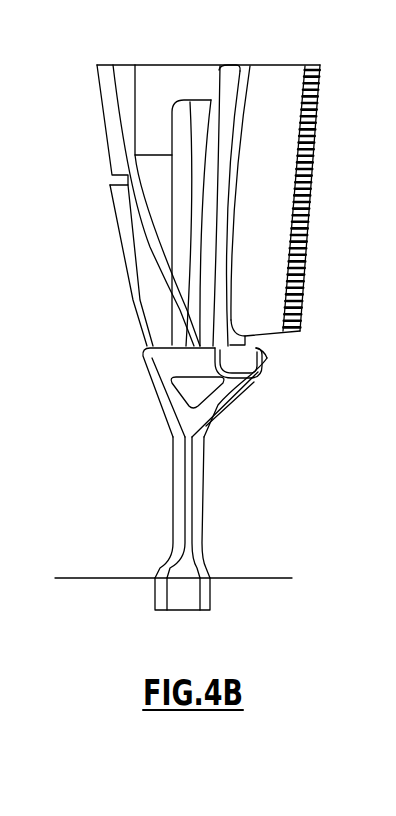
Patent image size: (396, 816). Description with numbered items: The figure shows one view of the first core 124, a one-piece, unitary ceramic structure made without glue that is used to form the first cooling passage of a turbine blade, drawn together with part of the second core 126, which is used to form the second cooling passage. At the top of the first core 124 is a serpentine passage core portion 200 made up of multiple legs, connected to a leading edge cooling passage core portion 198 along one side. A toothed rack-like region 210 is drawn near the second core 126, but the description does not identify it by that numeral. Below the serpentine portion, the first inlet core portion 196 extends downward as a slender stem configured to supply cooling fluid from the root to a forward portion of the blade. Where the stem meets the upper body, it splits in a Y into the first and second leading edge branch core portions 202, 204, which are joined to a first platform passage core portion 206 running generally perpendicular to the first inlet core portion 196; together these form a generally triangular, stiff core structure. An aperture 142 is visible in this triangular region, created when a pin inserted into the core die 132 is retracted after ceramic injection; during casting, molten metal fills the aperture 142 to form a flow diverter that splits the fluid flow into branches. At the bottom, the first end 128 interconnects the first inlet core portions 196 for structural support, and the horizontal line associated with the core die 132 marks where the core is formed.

The serpentine passage core portion 200 is at (167, 80).
The leading edge cooling passage core portion 198 is at (104, 120).
The first core 124 is at (108, 259).
The ratchet rack 210 is at (295, 197).
The second core 126 is at (299, 335).
The first platform passage core portion 206 is at (187, 362).
The second leading edge branch core portion 204 is at (217, 398).
The first leading edge branch core portion 202 is at (165, 388).
The aperture 142 is at (196, 398).
The first inlet core portion 196 is at (188, 490).
The core die 132 is at (258, 578).
The first end 128 is at (177, 598).